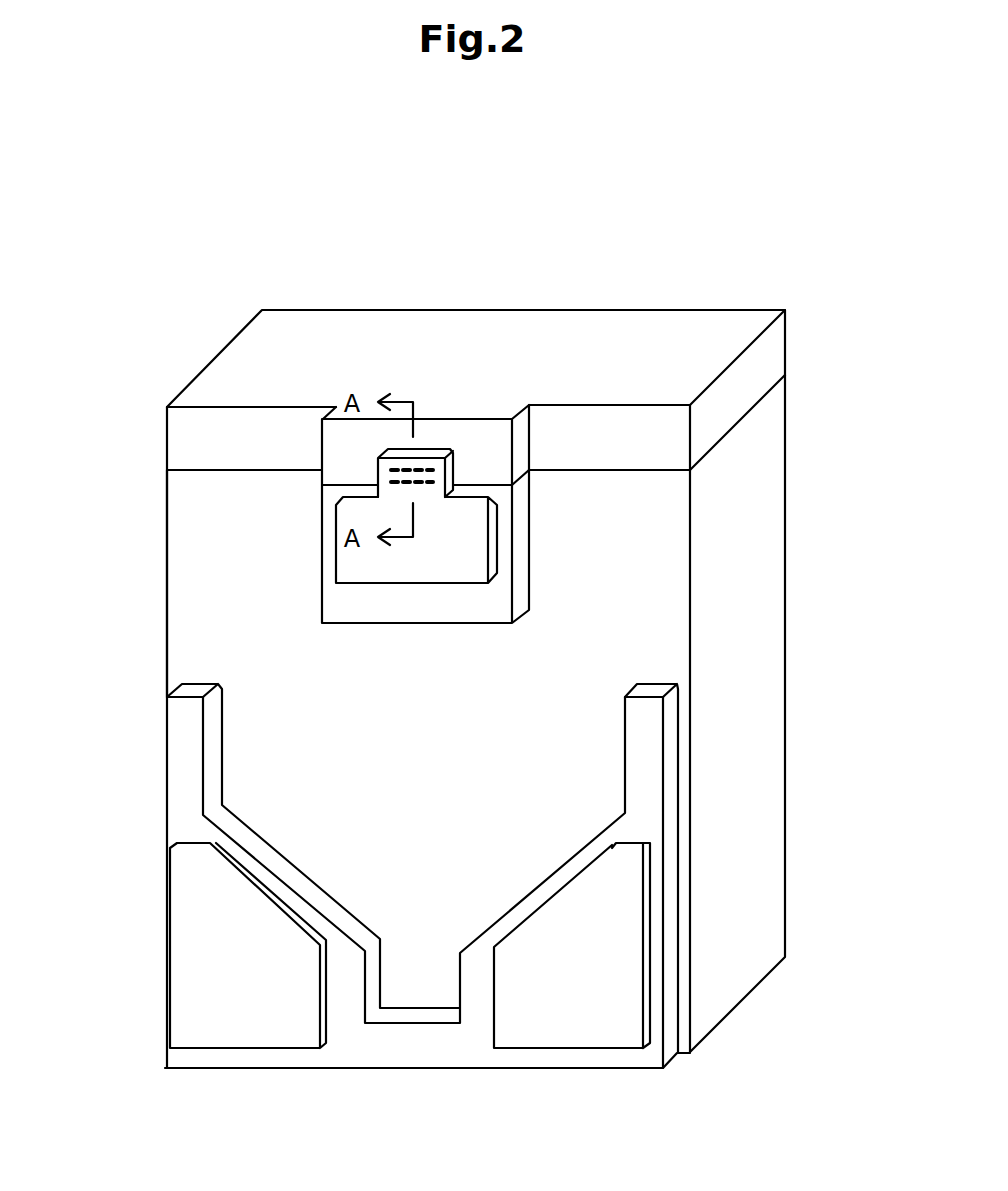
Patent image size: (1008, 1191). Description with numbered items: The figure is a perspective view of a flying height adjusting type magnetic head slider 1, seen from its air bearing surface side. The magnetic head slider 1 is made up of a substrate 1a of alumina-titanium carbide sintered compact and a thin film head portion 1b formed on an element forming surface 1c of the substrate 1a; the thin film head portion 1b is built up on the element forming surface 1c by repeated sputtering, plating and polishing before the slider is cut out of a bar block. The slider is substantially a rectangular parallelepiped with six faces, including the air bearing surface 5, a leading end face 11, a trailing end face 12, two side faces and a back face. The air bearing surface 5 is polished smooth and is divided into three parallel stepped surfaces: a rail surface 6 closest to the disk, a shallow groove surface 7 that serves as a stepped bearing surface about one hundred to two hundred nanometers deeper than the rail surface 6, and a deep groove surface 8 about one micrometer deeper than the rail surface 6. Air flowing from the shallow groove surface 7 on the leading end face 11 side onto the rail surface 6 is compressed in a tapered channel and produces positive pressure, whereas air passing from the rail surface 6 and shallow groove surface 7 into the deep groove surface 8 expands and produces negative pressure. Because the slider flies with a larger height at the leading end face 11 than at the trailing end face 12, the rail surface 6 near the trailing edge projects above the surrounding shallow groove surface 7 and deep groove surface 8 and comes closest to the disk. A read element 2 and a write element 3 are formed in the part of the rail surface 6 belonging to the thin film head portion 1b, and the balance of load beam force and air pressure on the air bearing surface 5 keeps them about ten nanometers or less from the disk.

The magnetic head slider 1 is at (895, 232).
The substrate 1a is at (762, 455).
The thin film head portion 1b is at (752, 383).
The element forming surface 1c is at (780, 393).
The read element 2 is at (418, 475).
The write element 3 is at (383, 467).
The air bearing surface 5 is at (50, 190).
The rail surface 6 is at (370, 550).
The shallow groove surface 7 is at (343, 603).
The deep groove surface 8 is at (210, 645).
The leading end face 11 is at (365, 1070).
The trailing end face 12 is at (268, 365).